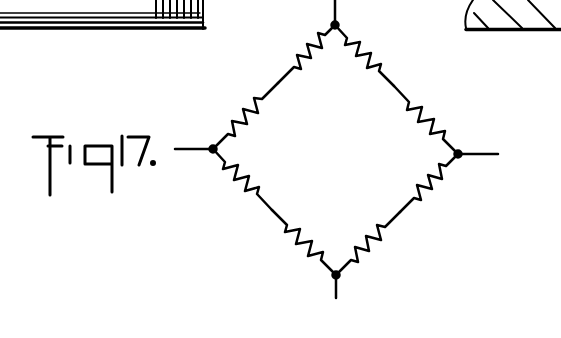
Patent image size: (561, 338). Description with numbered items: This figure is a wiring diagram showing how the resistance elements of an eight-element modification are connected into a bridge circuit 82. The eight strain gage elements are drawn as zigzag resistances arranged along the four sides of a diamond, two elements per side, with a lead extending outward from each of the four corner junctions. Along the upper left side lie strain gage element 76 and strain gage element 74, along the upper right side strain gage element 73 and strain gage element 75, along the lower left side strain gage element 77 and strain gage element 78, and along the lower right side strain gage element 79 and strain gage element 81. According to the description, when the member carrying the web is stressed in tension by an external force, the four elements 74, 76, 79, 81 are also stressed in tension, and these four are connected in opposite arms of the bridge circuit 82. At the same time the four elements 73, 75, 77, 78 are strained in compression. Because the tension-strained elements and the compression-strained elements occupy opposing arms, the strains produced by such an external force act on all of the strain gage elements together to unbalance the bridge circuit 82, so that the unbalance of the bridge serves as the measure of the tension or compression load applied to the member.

The strain gage element 73 is at (372, 50).
The strain gage element 74 is at (245, 98).
The strain gage element 75 is at (425, 107).
The strain gage element 76 is at (297, 43).
The strain gage element 77 is at (235, 183).
The strain gage element 78 is at (286, 247).
The strain gage element 79 is at (444, 188).
The strain gage element 81 is at (386, 243).
The bridge circuit 82 is at (336, 158).